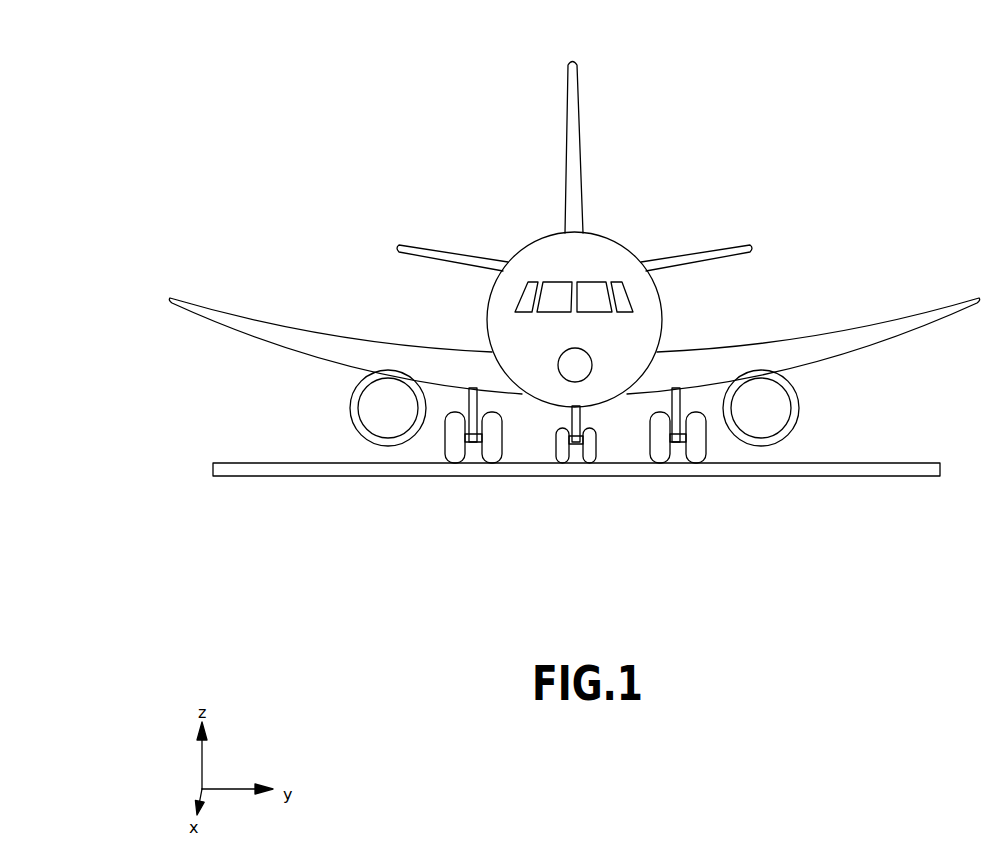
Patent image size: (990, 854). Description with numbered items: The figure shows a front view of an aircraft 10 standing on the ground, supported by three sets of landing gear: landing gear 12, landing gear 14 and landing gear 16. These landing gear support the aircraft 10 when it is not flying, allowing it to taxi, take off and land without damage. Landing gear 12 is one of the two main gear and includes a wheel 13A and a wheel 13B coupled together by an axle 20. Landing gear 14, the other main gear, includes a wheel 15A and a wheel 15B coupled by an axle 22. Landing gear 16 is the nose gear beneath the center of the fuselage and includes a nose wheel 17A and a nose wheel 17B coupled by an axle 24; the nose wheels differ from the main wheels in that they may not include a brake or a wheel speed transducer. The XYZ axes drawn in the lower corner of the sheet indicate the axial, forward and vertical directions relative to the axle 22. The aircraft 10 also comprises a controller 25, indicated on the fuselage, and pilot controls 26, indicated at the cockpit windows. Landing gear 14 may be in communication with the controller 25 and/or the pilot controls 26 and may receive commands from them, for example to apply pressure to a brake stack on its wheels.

The aircraft 10 is at (420, 152).
The landing gear 12 is at (730, 451).
The wheel 13A is at (710, 452).
The wheel 13B is at (666, 414).
The landing gear 14 is at (418, 448).
The wheel 15A is at (447, 456).
The wheel 15B is at (504, 457).
The landing gear 16 is at (610, 439).
The nose wheel 17A is at (600, 457).
The nose wheel 17B is at (557, 458).
The axle 20 is at (677, 454).
The axle 22 is at (470, 455).
The axle 24 is at (575, 458).
The controller 25 is at (542, 373).
The pilot controls 26 is at (522, 303).